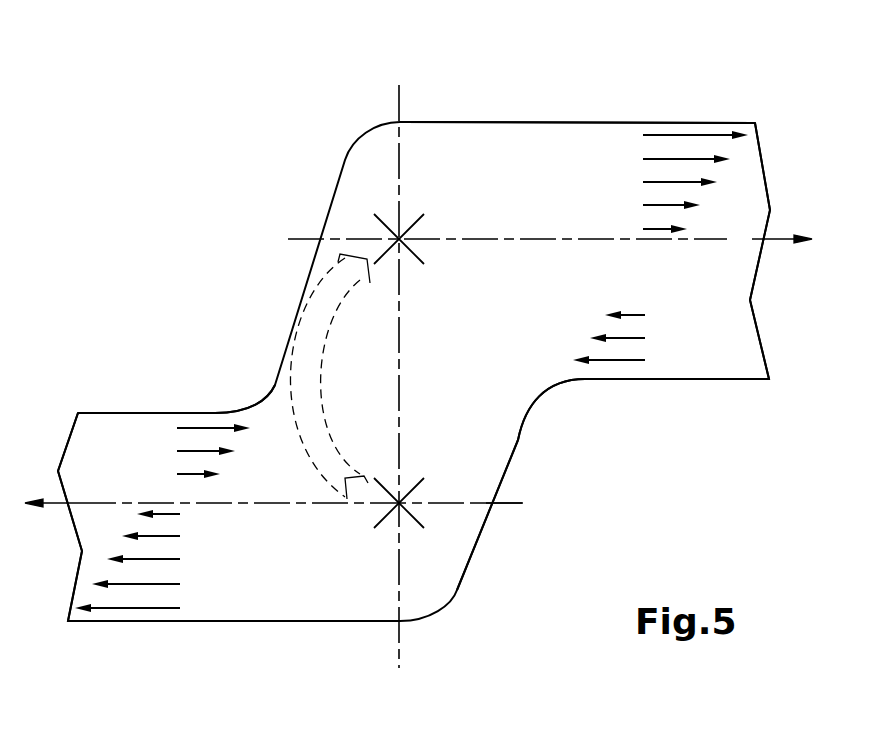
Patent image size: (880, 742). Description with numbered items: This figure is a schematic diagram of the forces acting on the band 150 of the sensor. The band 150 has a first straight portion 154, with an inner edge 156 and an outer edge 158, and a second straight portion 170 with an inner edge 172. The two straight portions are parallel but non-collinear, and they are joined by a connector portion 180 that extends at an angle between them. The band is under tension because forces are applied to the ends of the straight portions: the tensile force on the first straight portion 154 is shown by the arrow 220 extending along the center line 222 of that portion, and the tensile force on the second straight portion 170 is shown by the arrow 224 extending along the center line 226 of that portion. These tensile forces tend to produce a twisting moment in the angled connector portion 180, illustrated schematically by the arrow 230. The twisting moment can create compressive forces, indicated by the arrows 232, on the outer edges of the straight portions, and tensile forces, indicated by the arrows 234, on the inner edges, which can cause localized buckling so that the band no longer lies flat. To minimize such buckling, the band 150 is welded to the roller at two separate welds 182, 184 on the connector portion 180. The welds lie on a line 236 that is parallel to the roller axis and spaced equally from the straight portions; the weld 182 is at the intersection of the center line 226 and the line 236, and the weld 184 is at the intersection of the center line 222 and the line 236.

The band 150 is at (180, 224).
The first straight portion 154 is at (115, 638).
The inner edge 156 is at (133, 413).
The outer edge 158 is at (284, 623).
The second straight portion 170 is at (731, 394).
The inner edge 172 is at (448, 122).
The connector portion 180 is at (520, 472).
The weld 182 is at (410, 237).
The weld 184 is at (400, 504).
The arrow 220 is at (72, 505).
The center line 222 is at (507, 504).
The arrow 224 is at (777, 247).
The center line 226 is at (718, 238).
The arrow 230 is at (305, 353).
The arrows 232 is at (680, 157).
The arrows 234 is at (200, 426).
The line 236 is at (397, 100).